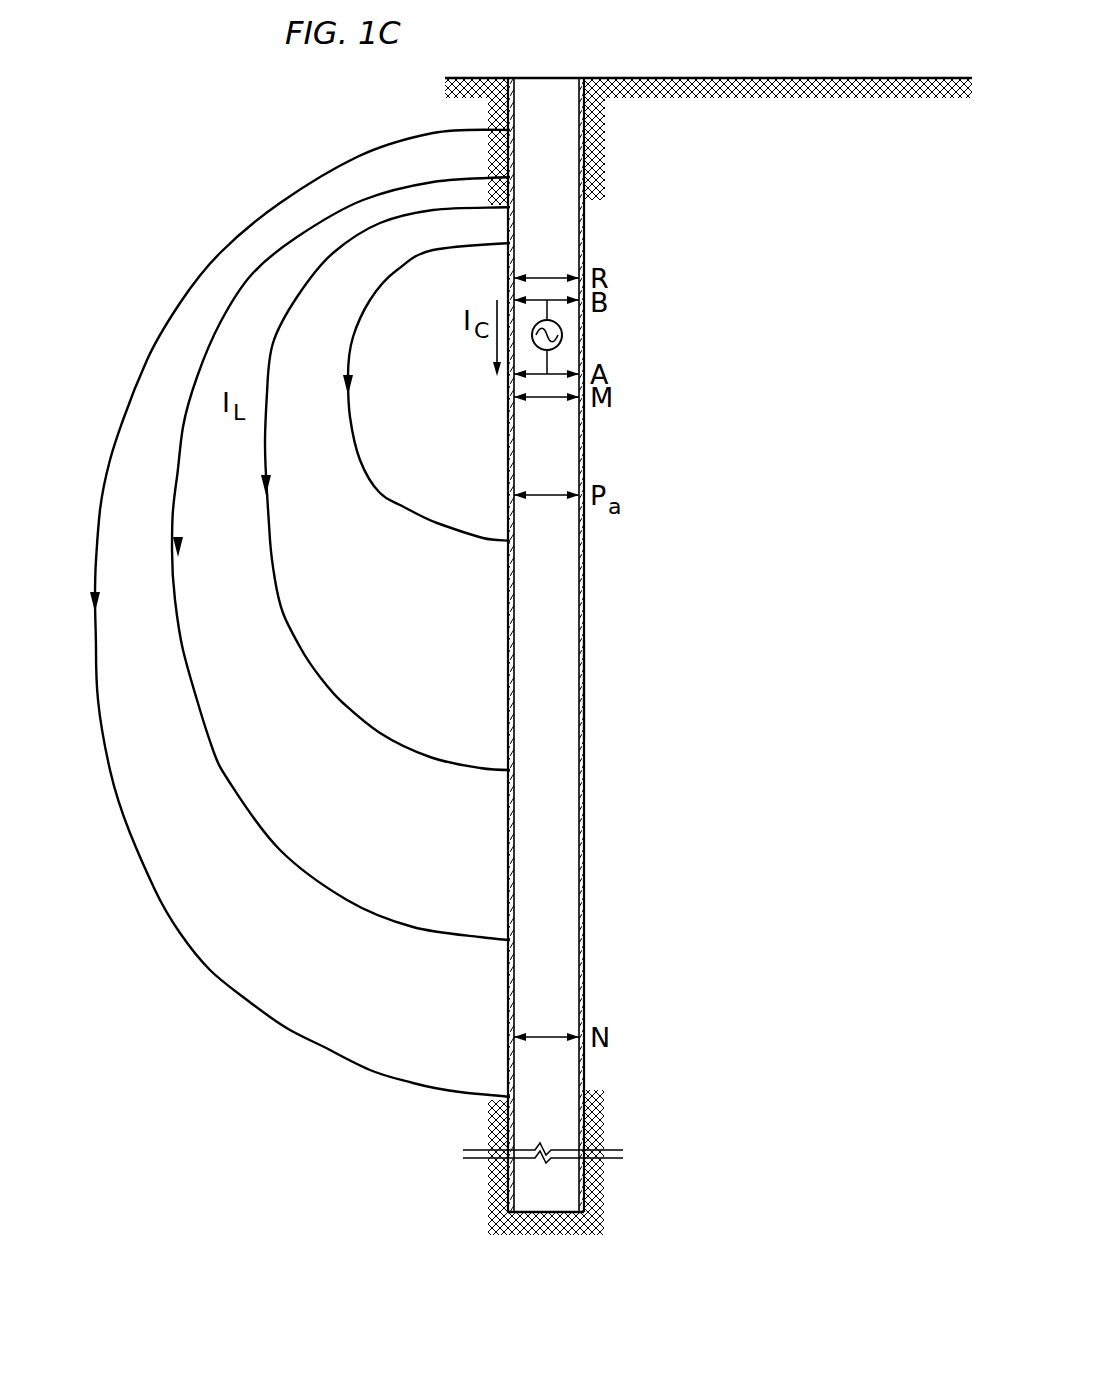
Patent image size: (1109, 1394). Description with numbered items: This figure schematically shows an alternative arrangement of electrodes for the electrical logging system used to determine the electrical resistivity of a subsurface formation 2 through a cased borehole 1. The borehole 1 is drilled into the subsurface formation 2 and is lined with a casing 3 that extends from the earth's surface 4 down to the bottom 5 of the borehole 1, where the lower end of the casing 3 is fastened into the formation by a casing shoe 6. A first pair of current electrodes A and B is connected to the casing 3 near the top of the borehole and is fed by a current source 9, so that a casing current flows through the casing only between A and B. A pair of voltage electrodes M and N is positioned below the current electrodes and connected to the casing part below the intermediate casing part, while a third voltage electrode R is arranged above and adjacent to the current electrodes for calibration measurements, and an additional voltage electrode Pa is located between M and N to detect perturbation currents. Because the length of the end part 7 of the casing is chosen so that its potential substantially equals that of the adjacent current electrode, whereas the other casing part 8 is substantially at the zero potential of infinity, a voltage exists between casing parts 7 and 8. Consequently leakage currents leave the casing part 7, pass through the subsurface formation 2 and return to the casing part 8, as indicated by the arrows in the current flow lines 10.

The borehole 1 is at (566, 458).
The subsurface formation 2 is at (745, 141).
The casing 3 is at (596, 589).
The earth's surface 4 is at (787, 78).
The bottom of the borehole 5 is at (546, 1214).
The casing shoe 6 is at (590, 1210).
The end part of the casing 7 is at (592, 202).
The other casing part 8 is at (585, 683).
The current source 9 is at (562, 336).
The current flow lines 10 is at (188, 447).